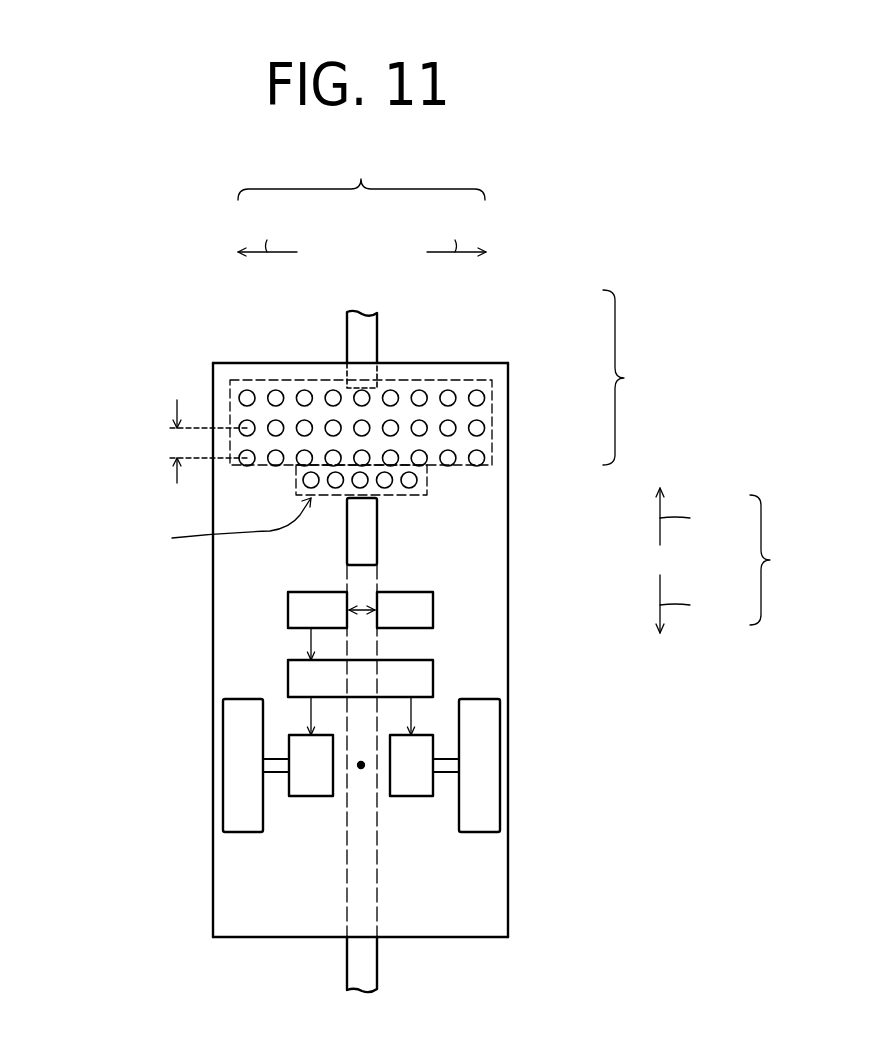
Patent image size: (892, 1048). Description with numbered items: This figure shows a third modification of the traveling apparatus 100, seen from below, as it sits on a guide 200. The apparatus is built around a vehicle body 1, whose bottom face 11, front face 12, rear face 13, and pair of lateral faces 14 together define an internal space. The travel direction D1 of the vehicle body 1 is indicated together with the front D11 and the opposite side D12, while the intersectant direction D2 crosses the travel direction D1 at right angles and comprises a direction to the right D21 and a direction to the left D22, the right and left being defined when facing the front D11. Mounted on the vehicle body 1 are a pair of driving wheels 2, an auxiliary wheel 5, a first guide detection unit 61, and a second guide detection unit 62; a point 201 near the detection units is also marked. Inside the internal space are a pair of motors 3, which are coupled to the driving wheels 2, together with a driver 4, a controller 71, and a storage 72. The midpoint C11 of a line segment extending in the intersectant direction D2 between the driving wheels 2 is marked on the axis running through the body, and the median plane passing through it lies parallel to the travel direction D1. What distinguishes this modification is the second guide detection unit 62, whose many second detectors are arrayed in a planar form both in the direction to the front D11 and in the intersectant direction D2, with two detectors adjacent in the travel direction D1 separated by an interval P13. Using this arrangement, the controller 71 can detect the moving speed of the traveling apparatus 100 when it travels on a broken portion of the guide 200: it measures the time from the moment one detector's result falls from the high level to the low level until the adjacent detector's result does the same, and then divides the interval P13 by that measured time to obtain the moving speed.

The traveling apparatus 100 is at (158, 933).
The vehicle body 1 is at (416, 621).
The bottom face 11 is at (477, 481).
The front face 12 is at (488, 362).
The rear face 13 is at (493, 937).
The lateral faces 14 is at (213, 395).
The guide 200 is at (378, 338).
The second guide detection unit 62 is at (230, 398).
The first guide detection unit 61 is at (296, 481).
The pipe coupling portion 201 is at (217, 528).
The interval P13 is at (172, 440).
The auxiliary wheel 5 is at (347, 545).
The controller 71 is at (288, 609).
The storage 72 is at (433, 611).
The driver 4 is at (288, 664).
The motors 3 is at (302, 796).
The driving wheels 2 is at (222, 796).
The midpoint C11 is at (360, 770).
The travel direction D1 is at (777, 560).
The front D11 is at (699, 516).
The first direction (other side) D12 is at (699, 604).
The intersectant direction D2 is at (361, 171).
The right D21 is at (456, 226).
The left D22 is at (267, 226).